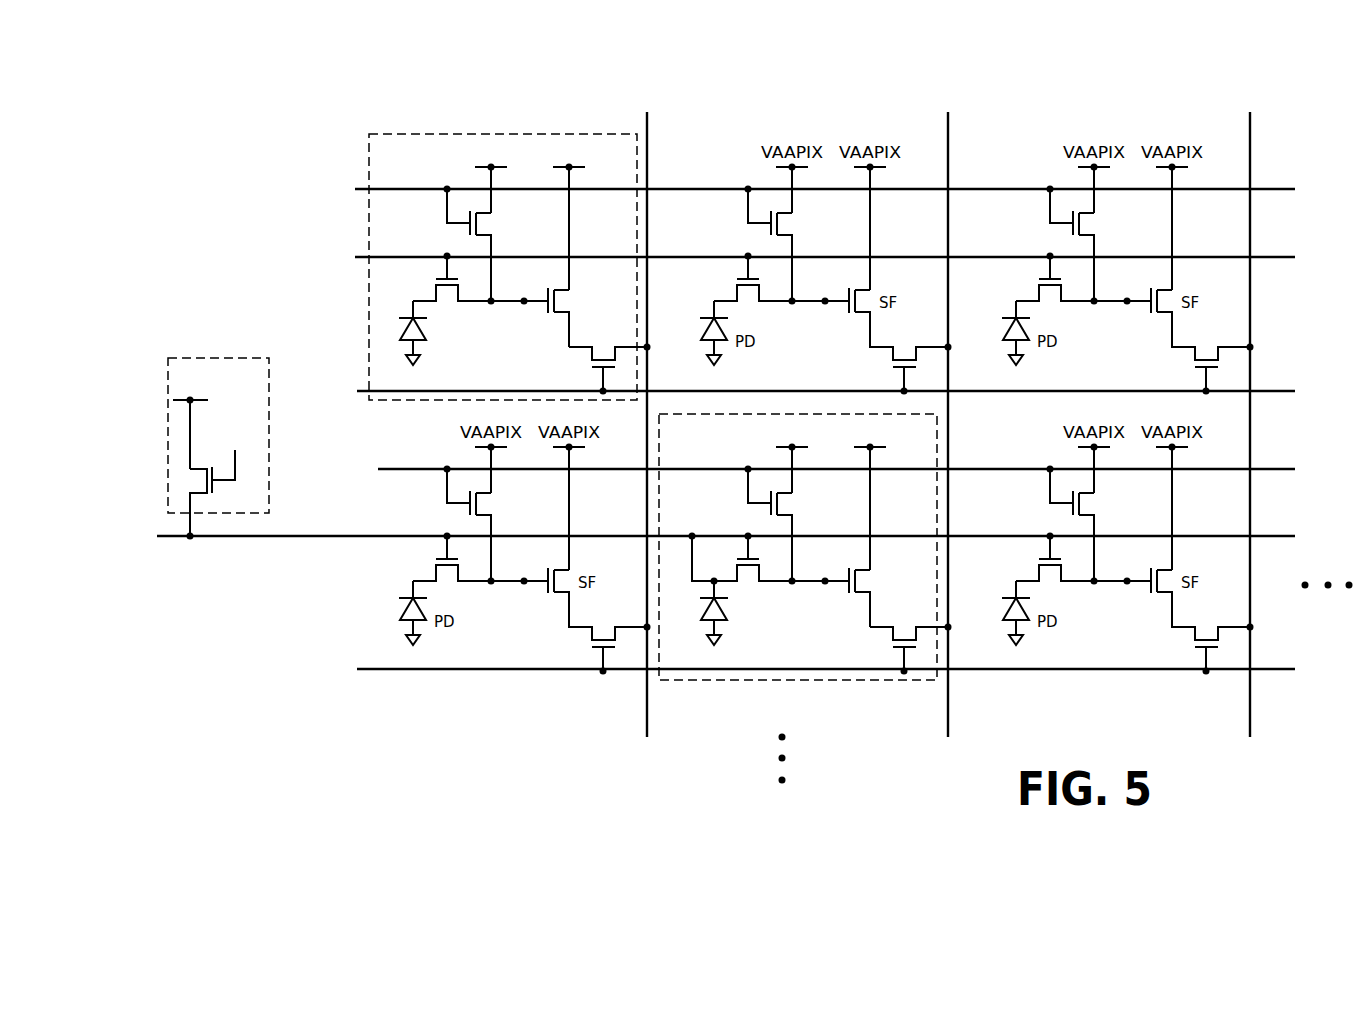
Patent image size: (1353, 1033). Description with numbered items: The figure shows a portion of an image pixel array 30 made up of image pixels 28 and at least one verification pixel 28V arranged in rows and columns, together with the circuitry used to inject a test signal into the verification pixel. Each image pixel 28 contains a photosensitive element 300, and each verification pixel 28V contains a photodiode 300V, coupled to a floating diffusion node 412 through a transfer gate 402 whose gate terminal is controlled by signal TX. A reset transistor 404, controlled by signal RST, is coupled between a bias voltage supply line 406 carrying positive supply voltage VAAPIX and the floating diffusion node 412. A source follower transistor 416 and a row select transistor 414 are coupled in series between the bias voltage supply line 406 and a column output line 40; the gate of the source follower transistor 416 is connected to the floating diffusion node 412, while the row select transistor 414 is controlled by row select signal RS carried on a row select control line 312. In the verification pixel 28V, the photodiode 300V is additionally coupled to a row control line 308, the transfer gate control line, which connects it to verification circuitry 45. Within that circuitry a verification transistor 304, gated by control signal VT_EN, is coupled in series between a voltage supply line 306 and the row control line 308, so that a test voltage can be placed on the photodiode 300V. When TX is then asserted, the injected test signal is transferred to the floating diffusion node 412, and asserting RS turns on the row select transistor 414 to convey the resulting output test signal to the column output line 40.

The pixel array 30 is at (780, 403).
The image pixel 28 is at (503, 252).
The verification pixel 28V is at (798, 566).
The verification circuitry 45 is at (218, 420).
The voltage supply line 306 is at (155, 423).
The verification transistor 304 is at (178, 483).
The row control line 308 is at (680, 551).
The row select control line 312 is at (783, 683).
The photosensitive element 300 is at (386, 333).
The photodiode 300V is at (738, 593).
The transfer gate 402 is at (630, 433).
The reset transistor 404 is at (643, 384).
The bias voltage supply line 406 is at (664, 356).
The floating diffusion node 412 is at (653, 424).
The row select transistor 414 is at (739, 509).
The source follower transistor 416 is at (702, 461).
The column output line 40 is at (952, 413).